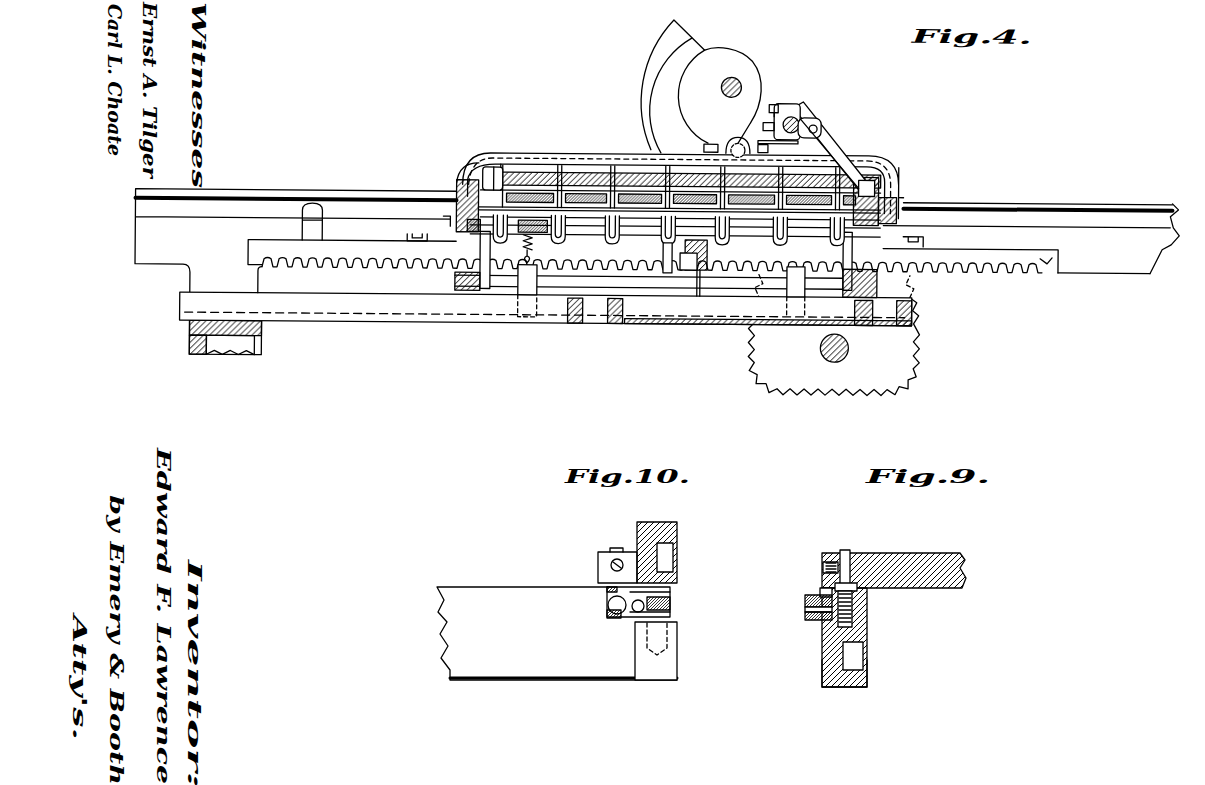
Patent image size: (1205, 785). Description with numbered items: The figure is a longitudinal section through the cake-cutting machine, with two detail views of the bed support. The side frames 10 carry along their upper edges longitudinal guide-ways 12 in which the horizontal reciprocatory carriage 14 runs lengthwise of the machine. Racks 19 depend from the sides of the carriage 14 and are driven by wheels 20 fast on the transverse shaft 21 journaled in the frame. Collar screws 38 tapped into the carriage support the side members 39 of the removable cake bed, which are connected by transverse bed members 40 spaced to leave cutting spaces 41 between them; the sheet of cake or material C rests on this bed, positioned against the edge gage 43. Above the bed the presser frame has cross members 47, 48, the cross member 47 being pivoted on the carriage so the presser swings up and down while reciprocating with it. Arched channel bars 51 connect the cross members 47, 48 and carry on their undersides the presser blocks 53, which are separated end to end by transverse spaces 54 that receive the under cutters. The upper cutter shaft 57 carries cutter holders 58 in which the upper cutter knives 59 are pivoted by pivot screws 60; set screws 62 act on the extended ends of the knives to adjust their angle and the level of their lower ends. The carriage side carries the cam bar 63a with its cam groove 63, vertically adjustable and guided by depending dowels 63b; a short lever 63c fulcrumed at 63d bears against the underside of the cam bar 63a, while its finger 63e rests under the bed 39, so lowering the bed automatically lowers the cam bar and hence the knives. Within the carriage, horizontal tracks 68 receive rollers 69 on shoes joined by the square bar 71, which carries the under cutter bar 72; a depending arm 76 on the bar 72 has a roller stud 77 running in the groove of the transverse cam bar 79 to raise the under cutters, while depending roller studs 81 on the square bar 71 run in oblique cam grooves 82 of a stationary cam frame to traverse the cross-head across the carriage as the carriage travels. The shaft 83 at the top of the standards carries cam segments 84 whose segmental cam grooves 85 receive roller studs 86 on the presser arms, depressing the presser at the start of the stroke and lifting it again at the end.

In FIG. 4, the side frames 10 is at (198, 273).
In FIG. 4, the longitudinal guide-ways 12 is at (265, 205).
In FIG. 4, the reciprocatory carriage 14 is at (460, 199).
In FIG. 9, the reciprocatory carriage 14 is at (822, 662).
In FIG. 4, the racks 19 is at (1047, 255).
In FIG. 4, the rack wheels 20 is at (897, 348).
In FIG. 4, the transverse shaft 21 is at (827, 358).
In FIG. 9, the collar screws 38 is at (867, 608).
In FIG. 10, the side members of the cake bed 39 is at (600, 563).
In FIG. 9, the side members of the cake bed 39 is at (903, 557).
In FIG. 4, the transverse bed members 40 is at (630, 194).
In FIG. 4, the transverse cutting spaces 41 is at (665, 201).
In FIG. 4, the edge gage 43 is at (490, 176).
In FIG. 4, the right hand cross member 47 is at (905, 197).
In FIG. 4, the cross member 48 is at (466, 174).
In FIG. 4, the channel bars 51 is at (532, 151).
In FIG. 4, the presser blocks 53 is at (520, 158).
In FIG. 4, the transverse spaces 54 is at (556, 170).
In FIG. 4, the sheet of cake material C is at (600, 171).
In FIG. 4, the upper cutter shaft 57 is at (797, 114).
In FIG. 4, the cutter holders 58 is at (815, 121).
In FIG. 4, the upper cutter knives 59 is at (830, 143).
In FIG. 4, the pivot screws 60 is at (824, 121).
In FIG. 4, the adjustable set screws 62 is at (774, 101).
In FIG. 10, the cam groove 63 is at (665, 555).
In FIG. 10, the cam bar 63a is at (677, 523).
In FIG. 10, the guide dowels 63b is at (667, 632).
In FIG. 10, the short lever 63c is at (615, 613).
In FIG. 9, the short lever 63c is at (807, 618).
In FIG. 10, the fulcrum 63d is at (657, 597).
In FIG. 10, the finger 63e is at (617, 592).
In FIG. 9, the finger 63e is at (823, 595).
In FIG. 4, the horizontal tracks 68 is at (463, 237).
In FIG. 4, the rollers 69 is at (462, 249).
In FIG. 4, the square bar 71 is at (578, 278).
In FIG. 4, the under cutter bar 72 is at (582, 235).
In FIG. 4, the depending arm 76 is at (668, 270).
In FIG. 4, the roller stud 77 is at (700, 294).
In FIG. 4, the transverse cam bar 79 is at (708, 249).
In FIG. 4, the depending roller studs 81 is at (518, 294).
In FIG. 4, the oblique cam grooves 82 is at (600, 311).
In FIG. 4, the transverse shaft 83 is at (735, 74).
In FIG. 4, the cam segments 84 is at (667, 33).
In FIG. 4, the segmental cam grooves 85 is at (668, 59).
In FIG. 4, the roller studs 86 is at (736, 139).